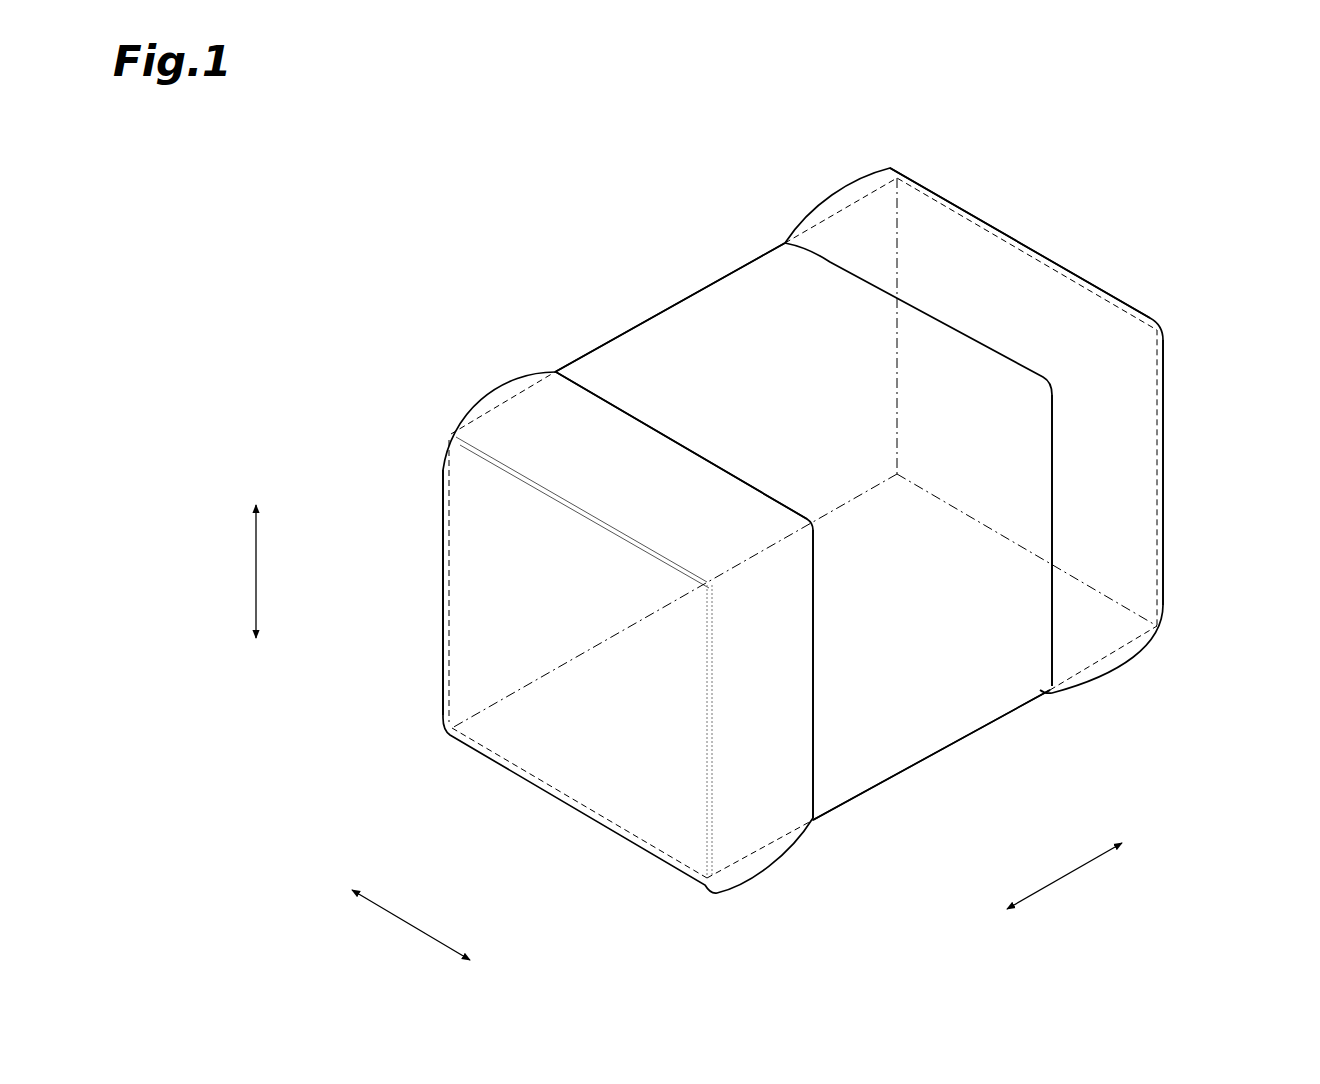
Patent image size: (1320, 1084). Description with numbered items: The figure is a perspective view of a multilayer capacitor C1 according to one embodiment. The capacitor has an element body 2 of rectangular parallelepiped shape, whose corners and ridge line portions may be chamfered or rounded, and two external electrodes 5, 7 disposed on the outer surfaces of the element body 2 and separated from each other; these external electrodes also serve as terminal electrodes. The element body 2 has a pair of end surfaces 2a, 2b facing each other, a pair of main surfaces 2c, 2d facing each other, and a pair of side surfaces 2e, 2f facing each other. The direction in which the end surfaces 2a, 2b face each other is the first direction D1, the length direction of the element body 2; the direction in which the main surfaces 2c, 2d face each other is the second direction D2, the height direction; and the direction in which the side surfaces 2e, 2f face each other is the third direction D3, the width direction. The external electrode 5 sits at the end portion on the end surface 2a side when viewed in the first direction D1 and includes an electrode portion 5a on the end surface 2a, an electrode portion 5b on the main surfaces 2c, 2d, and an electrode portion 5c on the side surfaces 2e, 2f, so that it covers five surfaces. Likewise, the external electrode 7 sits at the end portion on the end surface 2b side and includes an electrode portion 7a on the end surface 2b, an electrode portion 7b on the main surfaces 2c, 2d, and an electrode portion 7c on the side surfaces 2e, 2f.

The multilayer capacitor C1 is at (1140, 212).
The element body 2 is at (663, 303).
The end surface 2a is at (570, 730).
The end surface 2b is at (1120, 465).
The main surface 2c is at (760, 307).
The main surface 2d is at (855, 718).
The side surface 2e is at (650, 372).
The side surface 2f is at (910, 718).
The external electrode 5 is at (451, 424).
The electrode portion 5a is at (664, 782).
The electrode portion 5b is at (685, 502).
The electrode portion 5c is at (773, 675).
The external electrode 7 is at (856, 176).
The electrode portion 7a is at (1138, 397).
The electrode portion 7b is at (972, 265).
The electrode portion 7c is at (1125, 542).
The first direction D1 is at (1053, 883).
The second direction D2 is at (258, 572).
The third direction D3 is at (410, 925).